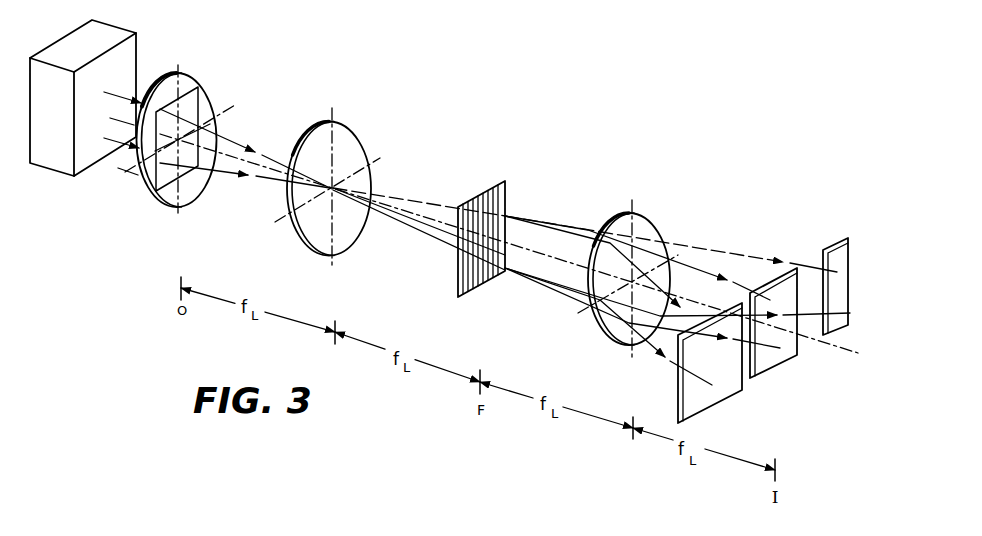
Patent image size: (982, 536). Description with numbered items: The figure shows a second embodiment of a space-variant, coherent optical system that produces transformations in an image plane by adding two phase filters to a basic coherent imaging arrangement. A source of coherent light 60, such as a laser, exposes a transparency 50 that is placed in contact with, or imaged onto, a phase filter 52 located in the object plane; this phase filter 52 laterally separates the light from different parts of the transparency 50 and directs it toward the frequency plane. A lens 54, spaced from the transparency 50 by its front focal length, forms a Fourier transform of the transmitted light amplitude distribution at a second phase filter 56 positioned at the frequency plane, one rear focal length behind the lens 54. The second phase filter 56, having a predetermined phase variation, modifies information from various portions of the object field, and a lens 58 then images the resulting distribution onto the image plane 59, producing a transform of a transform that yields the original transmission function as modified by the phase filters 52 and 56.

The transparency 50 is at (140, 172).
The phase filter 52 is at (166, 182).
The lens 54 is at (355, 152).
The second phase filter 56 is at (500, 186).
The lens 58 is at (645, 223).
The image plane 59 is at (817, 253).
The source of coherent light 60 is at (130, 62).